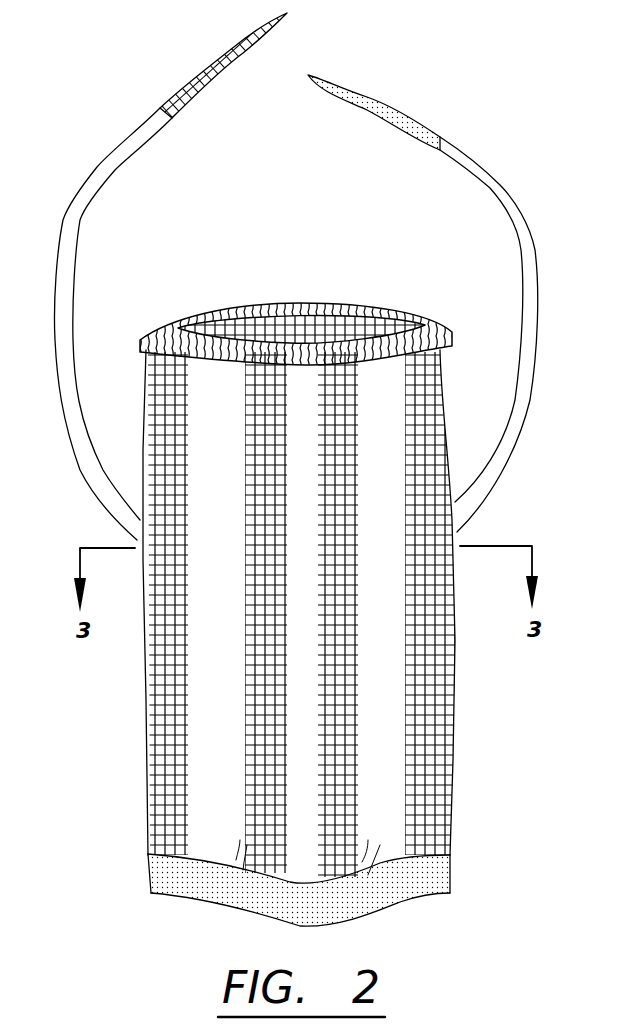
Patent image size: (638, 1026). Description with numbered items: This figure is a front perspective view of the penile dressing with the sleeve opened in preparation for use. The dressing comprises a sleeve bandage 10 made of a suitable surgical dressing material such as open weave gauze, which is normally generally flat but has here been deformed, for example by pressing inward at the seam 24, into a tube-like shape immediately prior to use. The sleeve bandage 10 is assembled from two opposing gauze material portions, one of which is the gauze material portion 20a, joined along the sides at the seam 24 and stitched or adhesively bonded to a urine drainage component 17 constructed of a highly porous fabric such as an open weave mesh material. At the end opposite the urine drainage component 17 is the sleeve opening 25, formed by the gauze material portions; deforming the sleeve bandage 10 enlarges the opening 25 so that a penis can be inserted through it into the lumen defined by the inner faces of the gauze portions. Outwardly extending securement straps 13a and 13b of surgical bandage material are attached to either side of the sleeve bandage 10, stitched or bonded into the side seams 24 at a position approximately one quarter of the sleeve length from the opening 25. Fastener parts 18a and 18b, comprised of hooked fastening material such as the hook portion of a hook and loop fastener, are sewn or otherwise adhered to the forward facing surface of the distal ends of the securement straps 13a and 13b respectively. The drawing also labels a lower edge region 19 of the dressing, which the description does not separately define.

The sleeve bandage 10 is at (128, 809).
The securement strap 13a is at (73, 365).
The securement strap 13b is at (500, 198).
The urine drainage component 17 is at (240, 880).
The fastener part 18a is at (199, 80).
The fastener part 18b is at (372, 112).
The bottom edge 19 is at (387, 897).
The gauze material portion 20a is at (393, 737).
The seam 24 is at (147, 767).
The opening 25 is at (252, 338).